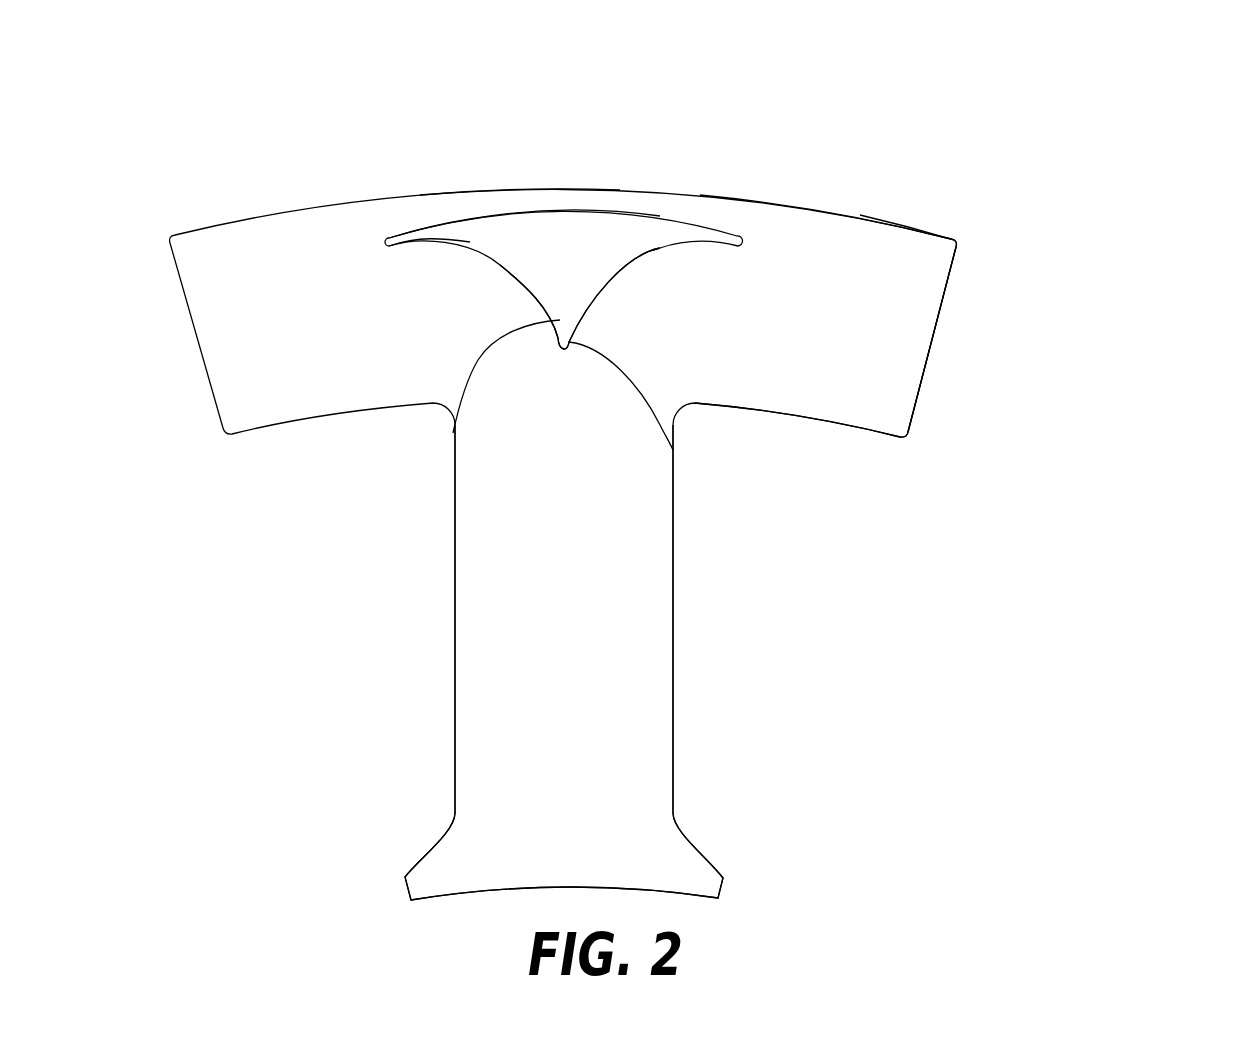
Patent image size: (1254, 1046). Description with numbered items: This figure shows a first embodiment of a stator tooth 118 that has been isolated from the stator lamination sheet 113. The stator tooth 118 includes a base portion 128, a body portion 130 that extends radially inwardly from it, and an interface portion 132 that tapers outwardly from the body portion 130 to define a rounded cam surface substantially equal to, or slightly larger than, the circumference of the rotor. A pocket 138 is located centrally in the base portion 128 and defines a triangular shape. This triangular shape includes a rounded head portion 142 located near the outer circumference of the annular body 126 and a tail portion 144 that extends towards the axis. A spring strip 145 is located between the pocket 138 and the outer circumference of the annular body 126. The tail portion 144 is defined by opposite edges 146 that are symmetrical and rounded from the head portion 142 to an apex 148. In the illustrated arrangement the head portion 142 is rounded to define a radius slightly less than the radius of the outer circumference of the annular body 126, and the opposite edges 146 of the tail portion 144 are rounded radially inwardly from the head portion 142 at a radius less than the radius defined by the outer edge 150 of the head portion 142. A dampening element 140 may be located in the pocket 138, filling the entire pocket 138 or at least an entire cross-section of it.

The stator tooth 118 is at (1160, 122).
The stator lamination sheet 113 is at (945, 230).
The annular body 126 is at (937, 288).
The base portion 128 is at (778, 263).
The spring strip 145 is at (502, 190).
The body portion 130 is at (642, 592).
The interface portion 132 is at (642, 865).
The pocket 138 is at (375, 232).
The dampening element 140 is at (448, 230).
The outer edge 150 is at (557, 212).
The head portion 142 is at (582, 233).
The opposite edges 146 is at (617, 270).
The tail portion 144 is at (453, 433).
The apex 148 is at (673, 450).